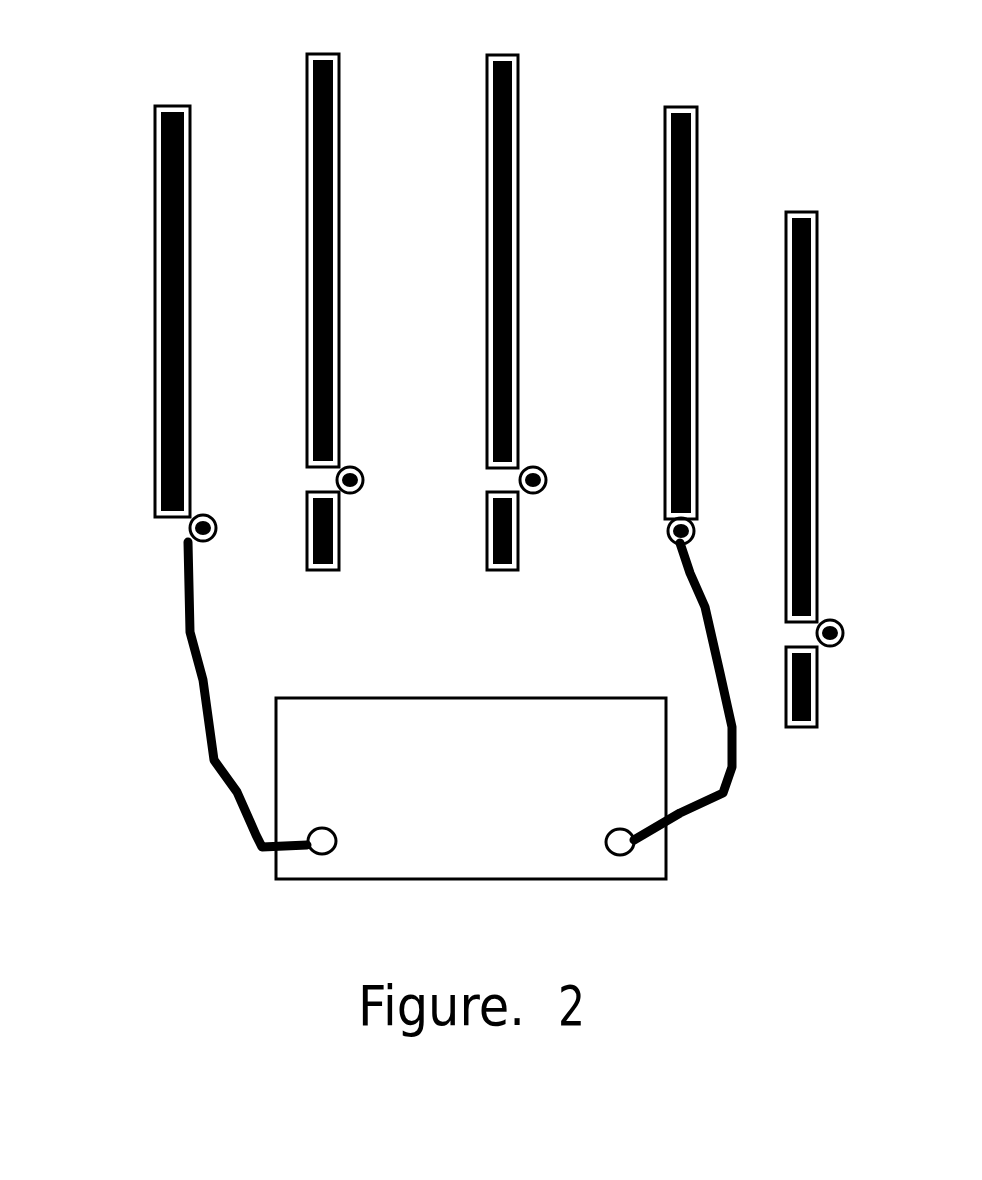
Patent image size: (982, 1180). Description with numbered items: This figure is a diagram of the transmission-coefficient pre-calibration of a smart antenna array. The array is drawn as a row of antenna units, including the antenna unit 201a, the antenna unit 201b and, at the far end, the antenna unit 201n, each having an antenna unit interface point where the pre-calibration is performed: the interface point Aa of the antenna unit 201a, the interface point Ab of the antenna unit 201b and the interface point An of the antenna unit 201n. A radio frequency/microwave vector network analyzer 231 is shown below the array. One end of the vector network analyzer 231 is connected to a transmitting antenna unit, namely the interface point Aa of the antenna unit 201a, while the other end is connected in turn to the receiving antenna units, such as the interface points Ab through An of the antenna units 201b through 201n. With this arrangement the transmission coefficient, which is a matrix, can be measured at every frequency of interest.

The antenna unit 201a is at (110, 281).
The antenna unit 201b is at (307, 295).
The antenna unit 201n is at (833, 440).
The radio frequency/microwave vector network analyzer 231 is at (471, 788).
The antenna unit interface point Aa is at (220, 544).
The antenna unit interface point Ab is at (370, 494).
The antenna unit interface point An is at (849, 649).